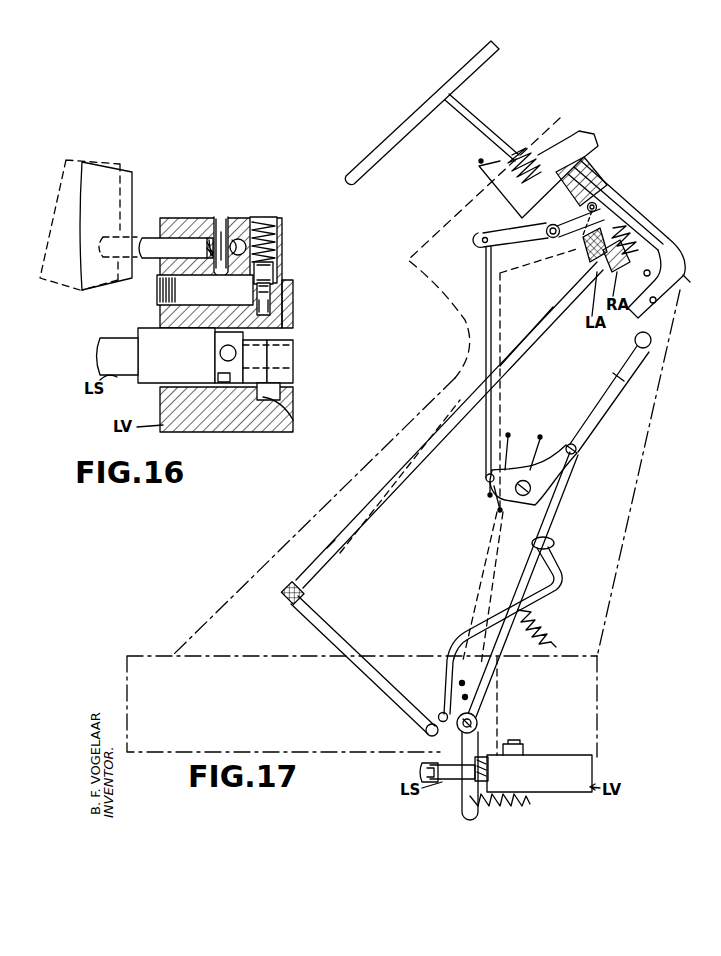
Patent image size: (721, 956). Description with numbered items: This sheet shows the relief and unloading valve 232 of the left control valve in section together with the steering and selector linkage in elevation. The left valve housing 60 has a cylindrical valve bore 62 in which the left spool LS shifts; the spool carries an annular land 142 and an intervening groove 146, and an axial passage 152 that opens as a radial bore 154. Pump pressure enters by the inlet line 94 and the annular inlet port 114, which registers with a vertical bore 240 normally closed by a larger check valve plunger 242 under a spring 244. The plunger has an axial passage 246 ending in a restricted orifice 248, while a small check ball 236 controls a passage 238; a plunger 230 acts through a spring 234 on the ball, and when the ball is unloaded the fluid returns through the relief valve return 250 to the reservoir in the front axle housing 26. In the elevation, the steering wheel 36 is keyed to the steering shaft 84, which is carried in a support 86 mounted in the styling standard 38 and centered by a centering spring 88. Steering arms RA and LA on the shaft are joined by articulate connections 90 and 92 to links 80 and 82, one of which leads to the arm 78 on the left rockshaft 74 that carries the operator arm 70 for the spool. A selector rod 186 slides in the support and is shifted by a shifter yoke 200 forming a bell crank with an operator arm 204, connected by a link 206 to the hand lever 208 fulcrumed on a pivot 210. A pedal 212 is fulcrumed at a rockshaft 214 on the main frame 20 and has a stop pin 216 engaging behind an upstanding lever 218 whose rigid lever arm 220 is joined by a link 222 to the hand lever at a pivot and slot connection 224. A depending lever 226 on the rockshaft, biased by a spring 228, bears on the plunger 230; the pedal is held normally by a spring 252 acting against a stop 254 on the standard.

In FIG. 17, the main frame 20 is at (146, 662).
In FIG. 17, the front axle housing 26 is at (598, 734).
In FIG. 17, the steering wheel 36 is at (422, 104).
In FIG. 17, the styling standard 38 is at (660, 386).
In FIG. 16, the housing 60 is at (293, 409).
In FIG. 16, the valve bore 62 is at (275, 391).
In FIG. 17, the left hand operator arm 70 is at (432, 762).
In FIG. 17, the left rockshaft 74 is at (425, 733).
In FIG. 17, the arm 78 is at (318, 620).
In FIG. 17, the link 80 is at (545, 340).
In FIG. 17, the link 82 is at (552, 308).
In FIG. 17, the steering shaft 84 is at (483, 128).
In FIG. 17, the support 86 is at (570, 147).
In FIG. 17, the centering spring 88 is at (517, 152).
In FIG. 17, the articulate connection 90 is at (660, 247).
In FIG. 17, the articulate connection 92 is at (630, 204).
In FIG. 17, the inlet line 94 is at (509, 740).
In FIG. 16, the inlet port 114 is at (293, 421).
In FIG. 16, the annular land 142 is at (260, 373).
In FIG. 16, the groove 146 is at (220, 380).
In FIG. 16, the axial passage 152 is at (293, 346).
In FIG. 16, the radial bore 154 is at (220, 356).
In FIG. 17, the selector rod 186 is at (692, 289).
In FIG. 17, the shifter yoke 200 is at (594, 203).
In FIG. 17, the operator arm 204 is at (500, 233).
In FIG. 17, the link 206 is at (484, 256).
In FIG. 17, the bell crank lever 208 is at (592, 412).
In FIG. 17, the pivot 210 is at (533, 490).
In FIG. 17, the pedal 212 is at (558, 567).
In FIG. 17, the fulcrum rockshaft 214 is at (477, 713).
In FIG. 17, the stop pin 216 is at (459, 675).
In FIG. 17, the upstanding lever 218 is at (466, 695).
In FIG. 17, the lever arm 220 is at (443, 713).
In FIG. 17, the link 222 is at (542, 522).
In FIG. 17, the pivot and slot connection 224 is at (590, 448).
In FIG. 16, the depending lever 226 is at (127, 192).
In FIG. 17, the depending lever 226 is at (460, 808).
In FIG. 17, the spring 228 is at (517, 800).
In FIG. 16, the plunger 230 is at (173, 240).
In FIG. 17, the plunger 230 is at (488, 760).
In FIG. 16, the relief and unloading valve 232 is at (300, 239).
In FIG. 16, the spring 234 is at (220, 217).
In FIG. 16, the small check ball 236 is at (233, 240).
In FIG. 16, the passage 238 is at (240, 247).
In FIG. 16, the vertical bore 240 is at (272, 284).
In FIG. 16, the check valve plunger 242 is at (272, 310).
In FIG. 16, the spring 244 is at (278, 226).
In FIG. 16, the axial passage 246 is at (273, 295).
In FIG. 16, the restricted orifice 248 is at (273, 268).
In FIG. 16, the relief valve return 250 is at (187, 290).
In FIG. 17, the spring 252 is at (527, 613).
In FIG. 17, the stop 254 is at (550, 645).